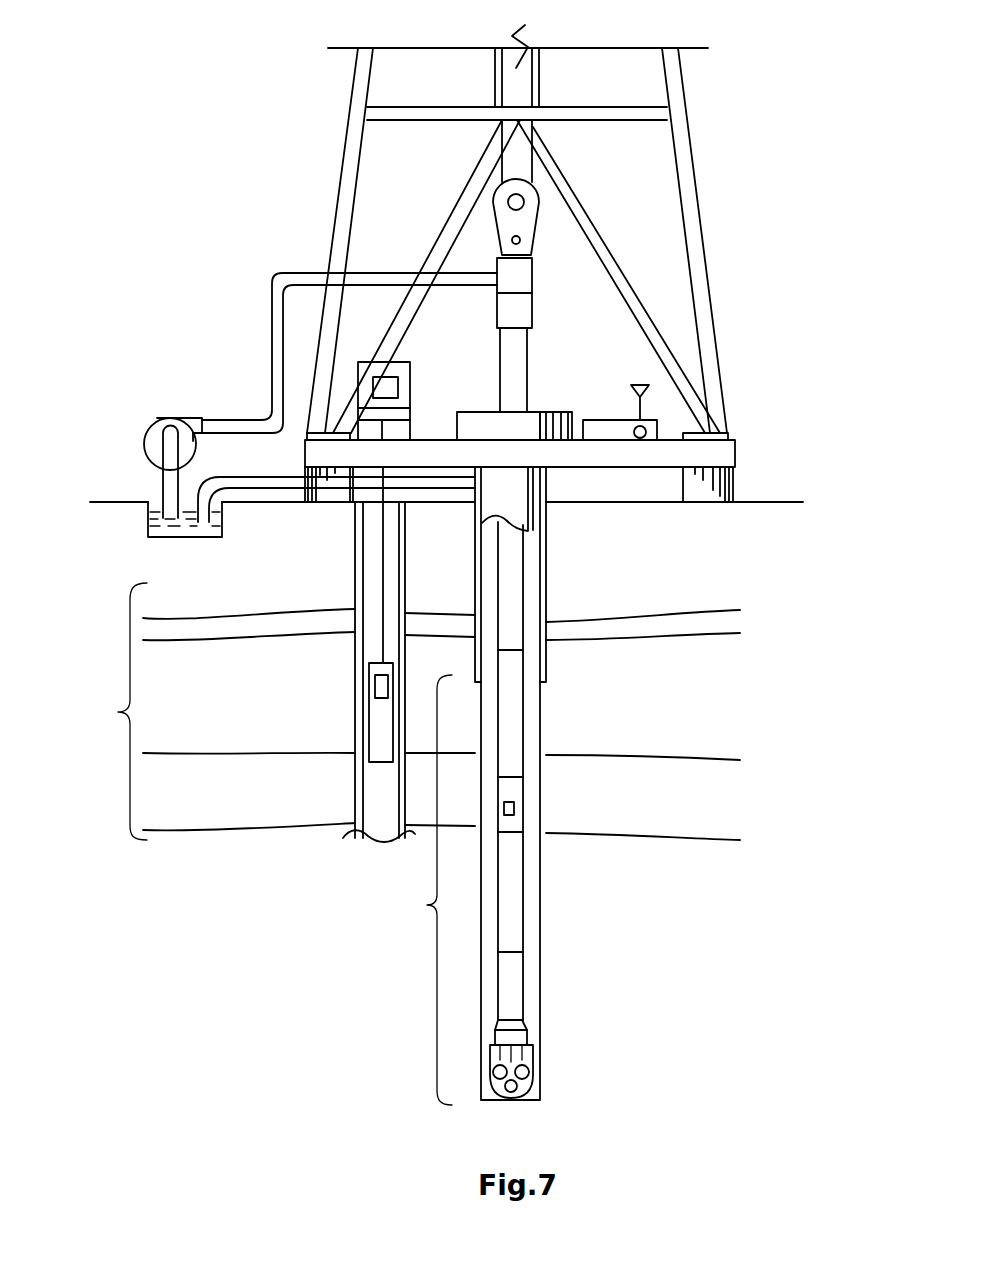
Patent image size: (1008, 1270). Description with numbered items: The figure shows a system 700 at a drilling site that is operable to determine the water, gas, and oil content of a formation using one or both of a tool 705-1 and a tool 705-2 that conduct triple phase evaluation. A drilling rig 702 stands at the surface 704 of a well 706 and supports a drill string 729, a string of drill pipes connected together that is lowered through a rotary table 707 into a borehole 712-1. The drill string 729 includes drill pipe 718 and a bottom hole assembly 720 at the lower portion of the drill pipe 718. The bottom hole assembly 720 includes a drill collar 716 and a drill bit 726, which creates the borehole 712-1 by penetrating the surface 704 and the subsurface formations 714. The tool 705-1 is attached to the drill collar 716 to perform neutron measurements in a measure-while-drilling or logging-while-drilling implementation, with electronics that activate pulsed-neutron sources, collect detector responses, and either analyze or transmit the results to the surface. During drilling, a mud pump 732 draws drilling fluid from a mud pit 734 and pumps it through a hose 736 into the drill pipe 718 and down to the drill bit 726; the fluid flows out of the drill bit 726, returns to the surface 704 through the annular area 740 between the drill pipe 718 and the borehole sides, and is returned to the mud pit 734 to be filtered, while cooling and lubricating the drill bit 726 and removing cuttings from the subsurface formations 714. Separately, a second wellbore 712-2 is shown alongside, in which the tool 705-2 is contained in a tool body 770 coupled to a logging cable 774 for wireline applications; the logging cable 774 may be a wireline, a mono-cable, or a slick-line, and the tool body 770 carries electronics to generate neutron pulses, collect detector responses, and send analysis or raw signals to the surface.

The system 700 is at (241, 90).
The drilling rig 702 is at (699, 210).
The surface 704 is at (752, 502).
The tool 705-1 is at (514, 808).
The tool 705-2 is at (376, 688).
The well 706 is at (554, 495).
The rotary table 707 is at (477, 412).
The borehole 712-1 is at (536, 615).
The casing of second wellbore 712-2 is at (357, 612).
The subsurface formations 714 is at (404, 711).
The drill collar 716 is at (514, 787).
The drill pipe 718 is at (522, 695).
The bottom hole assembly 720 is at (461, 786).
The drill bit 726 is at (532, 1062).
The drill string 729 is at (533, 560).
The mud pump 732 is at (176, 417).
The mud pit 734 is at (156, 507).
The hose 736 is at (272, 360).
The annular area 740 is at (530, 733).
The tool body 770 is at (368, 720).
The logging cable 774 is at (377, 567).